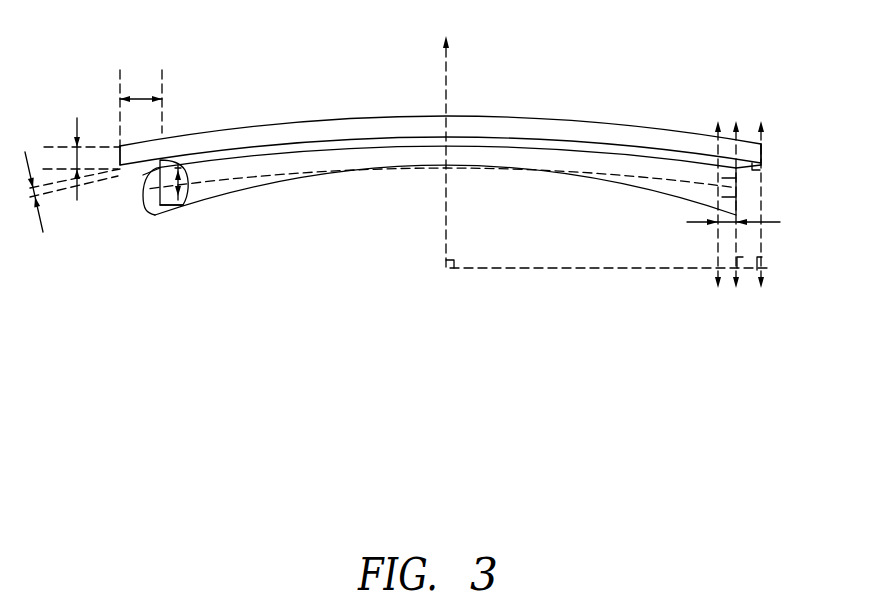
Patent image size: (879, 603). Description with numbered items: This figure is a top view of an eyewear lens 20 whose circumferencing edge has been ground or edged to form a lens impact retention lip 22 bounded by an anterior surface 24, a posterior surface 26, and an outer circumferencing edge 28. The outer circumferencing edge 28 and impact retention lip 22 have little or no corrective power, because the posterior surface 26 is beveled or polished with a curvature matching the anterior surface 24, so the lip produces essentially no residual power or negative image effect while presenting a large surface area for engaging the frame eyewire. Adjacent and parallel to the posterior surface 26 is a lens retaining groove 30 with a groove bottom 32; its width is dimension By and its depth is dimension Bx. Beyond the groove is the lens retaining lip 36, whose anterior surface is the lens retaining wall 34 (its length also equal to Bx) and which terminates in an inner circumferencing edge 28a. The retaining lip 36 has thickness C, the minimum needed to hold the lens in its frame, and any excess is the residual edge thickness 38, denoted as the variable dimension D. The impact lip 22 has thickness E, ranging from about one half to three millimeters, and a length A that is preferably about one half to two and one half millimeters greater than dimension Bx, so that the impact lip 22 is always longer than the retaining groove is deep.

The lens 20 is at (351, 124).
The lens impact retention lip 22 is at (143, 150).
The anterior surface 24 is at (756, 141).
The posterior surface 26 is at (120, 170).
The outer circumferencing edge 28 is at (119, 156).
The inner circumferencing edge 28a is at (152, 176).
The lens retaining groove 30 is at (740, 166).
The groove bottom 32 is at (161, 207).
The lens retaining wall 34 is at (145, 172).
The lens retaining lip 36 is at (725, 178).
The residual edge thickness 38 is at (730, 197).
The length of impact lip A is at (141, 107).
The thickness of retaining lip C is at (179, 170).
The residual thickness D is at (182, 197).
The thickness of impact lip E is at (76, 152).
The depth of retaining groove Bx is at (726, 224).
The width of groove By is at (32, 188).